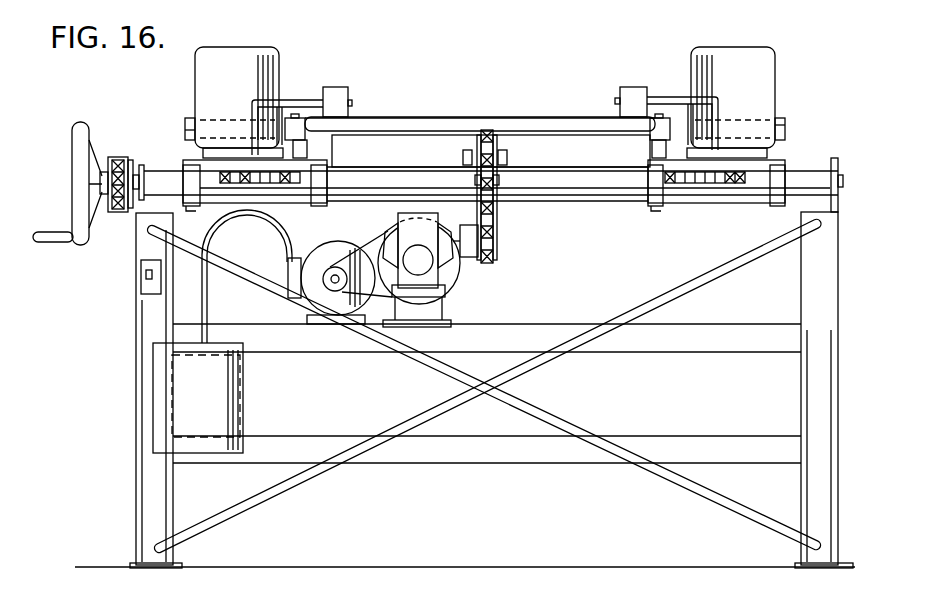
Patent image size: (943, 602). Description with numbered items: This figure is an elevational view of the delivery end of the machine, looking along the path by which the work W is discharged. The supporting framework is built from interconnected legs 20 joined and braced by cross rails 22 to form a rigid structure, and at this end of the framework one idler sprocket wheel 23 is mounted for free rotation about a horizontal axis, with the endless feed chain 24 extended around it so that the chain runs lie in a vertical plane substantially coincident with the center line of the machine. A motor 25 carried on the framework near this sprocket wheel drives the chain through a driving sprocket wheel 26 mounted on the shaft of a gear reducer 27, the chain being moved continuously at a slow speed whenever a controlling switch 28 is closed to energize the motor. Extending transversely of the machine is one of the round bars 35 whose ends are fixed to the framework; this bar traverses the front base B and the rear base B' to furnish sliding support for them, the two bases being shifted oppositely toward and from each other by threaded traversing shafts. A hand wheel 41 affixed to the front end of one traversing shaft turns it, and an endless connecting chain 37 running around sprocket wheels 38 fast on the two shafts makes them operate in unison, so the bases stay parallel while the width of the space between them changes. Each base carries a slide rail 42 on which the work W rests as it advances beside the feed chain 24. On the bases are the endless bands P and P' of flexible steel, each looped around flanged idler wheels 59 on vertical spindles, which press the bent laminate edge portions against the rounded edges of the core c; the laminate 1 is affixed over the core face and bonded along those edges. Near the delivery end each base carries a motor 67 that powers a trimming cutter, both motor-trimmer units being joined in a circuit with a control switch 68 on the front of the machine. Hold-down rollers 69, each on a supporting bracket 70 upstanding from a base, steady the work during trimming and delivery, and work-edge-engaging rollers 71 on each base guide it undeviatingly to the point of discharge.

The laminate 1 is at (537, 114).
The legs 20 is at (138, 403).
The cross rails 22 is at (492, 463).
The idler sprocket wheel 23 is at (497, 143).
The feed chain 24 is at (497, 197).
The motor 25 is at (341, 246).
The driving sprocket wheel 26 is at (498, 240).
The gear reducer 27 is at (405, 220).
The controlling switch 28 is at (243, 398).
The round bars 35 is at (580, 186).
The connecting chain 37 is at (113, 157).
The sprocket wheels 38 is at (132, 160).
The hand wheel 41 is at (79, 122).
The slide rail 42 is at (326, 168).
The flanged idler wheels 59 is at (187, 118).
The motor 67 is at (246, 48).
The control switch 68 is at (141, 286).
The hold-down rollers 69 is at (343, 87).
The supporting bracket 70 is at (252, 104).
The work-edge-engaging rollers 71 is at (297, 118).
The front base B is at (255, 197).
The rear base B' is at (712, 200).
The endless band P is at (178, 138).
The endless band P' is at (795, 121).
The work W is at (432, 117).
The core c is at (420, 140).